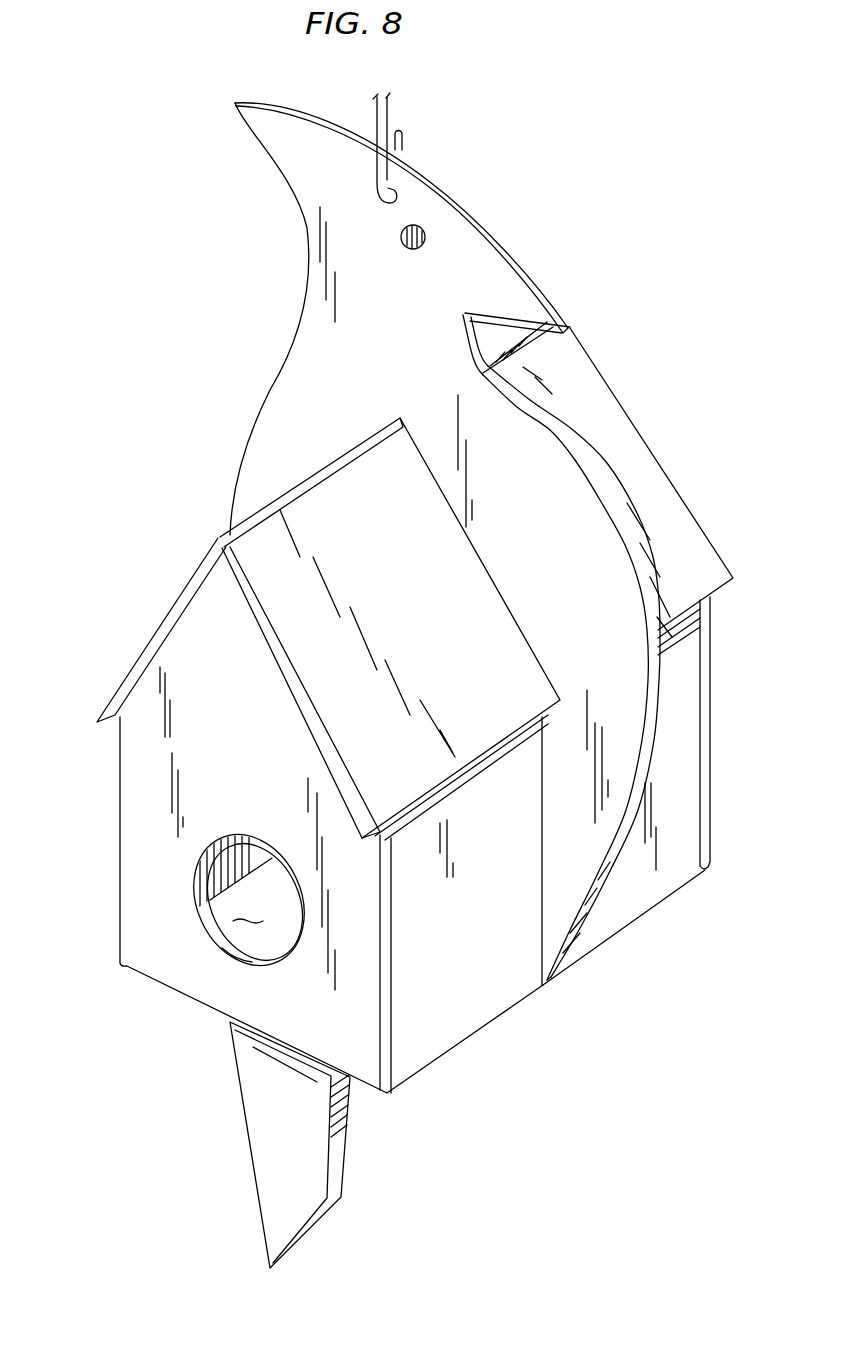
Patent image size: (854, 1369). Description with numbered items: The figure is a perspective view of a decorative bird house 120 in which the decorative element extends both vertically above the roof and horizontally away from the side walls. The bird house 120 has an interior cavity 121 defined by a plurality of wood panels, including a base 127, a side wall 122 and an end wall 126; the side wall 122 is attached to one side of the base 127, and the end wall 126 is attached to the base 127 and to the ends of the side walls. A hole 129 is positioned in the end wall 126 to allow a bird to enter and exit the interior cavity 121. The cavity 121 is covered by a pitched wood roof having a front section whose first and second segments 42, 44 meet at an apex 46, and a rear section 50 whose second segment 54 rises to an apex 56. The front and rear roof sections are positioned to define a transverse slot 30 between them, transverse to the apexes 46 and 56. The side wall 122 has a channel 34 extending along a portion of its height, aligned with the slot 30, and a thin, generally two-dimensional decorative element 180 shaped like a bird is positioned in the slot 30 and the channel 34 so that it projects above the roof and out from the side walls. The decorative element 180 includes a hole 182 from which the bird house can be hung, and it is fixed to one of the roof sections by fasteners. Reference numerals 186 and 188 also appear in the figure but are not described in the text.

The transverse slot 30 is at (599, 679).
The channel 34 is at (542, 908).
The first segment 42 is at (137, 663).
The second segment 44 is at (278, 667).
The apex 46 is at (227, 533).
The rear section 50 is at (598, 449).
The second segment 54 is at (610, 420).
The apex 56 is at (513, 330).
The bird house 120 is at (212, 350).
The interior cavity 121 is at (250, 909).
The side wall 122 is at (186, 928).
The end wall 126 is at (148, 956).
The base 127 is at (217, 913).
The hole 129 is at (232, 942).
The decorative element 180 is at (479, 228).
The hole 182 is at (397, 194).
The side wall 186 is at (578, 867).
The tail 188 is at (268, 1093).